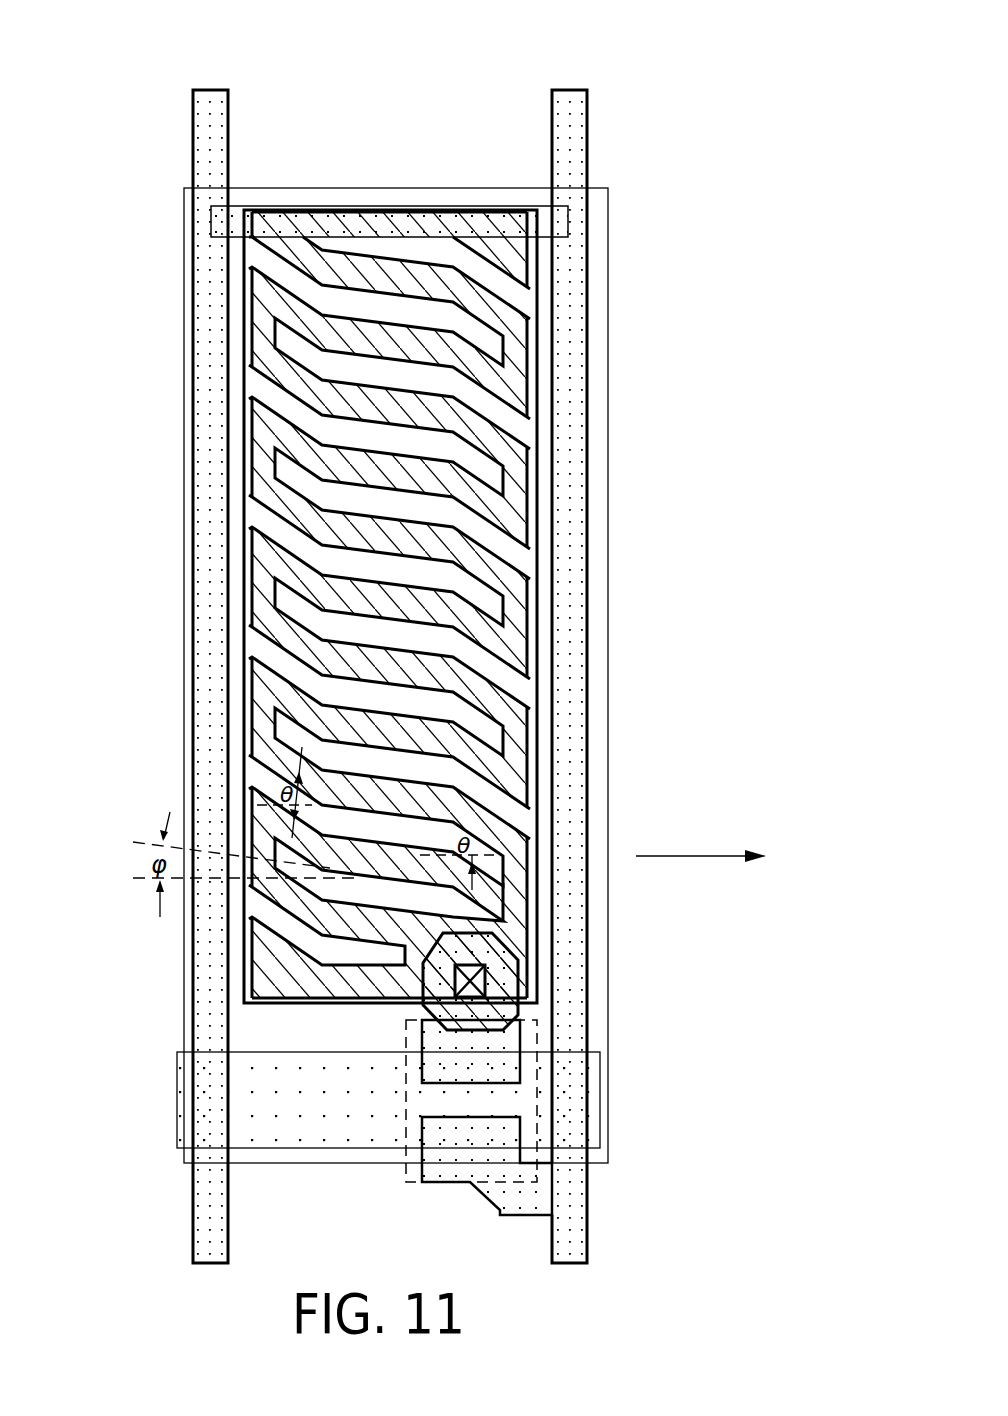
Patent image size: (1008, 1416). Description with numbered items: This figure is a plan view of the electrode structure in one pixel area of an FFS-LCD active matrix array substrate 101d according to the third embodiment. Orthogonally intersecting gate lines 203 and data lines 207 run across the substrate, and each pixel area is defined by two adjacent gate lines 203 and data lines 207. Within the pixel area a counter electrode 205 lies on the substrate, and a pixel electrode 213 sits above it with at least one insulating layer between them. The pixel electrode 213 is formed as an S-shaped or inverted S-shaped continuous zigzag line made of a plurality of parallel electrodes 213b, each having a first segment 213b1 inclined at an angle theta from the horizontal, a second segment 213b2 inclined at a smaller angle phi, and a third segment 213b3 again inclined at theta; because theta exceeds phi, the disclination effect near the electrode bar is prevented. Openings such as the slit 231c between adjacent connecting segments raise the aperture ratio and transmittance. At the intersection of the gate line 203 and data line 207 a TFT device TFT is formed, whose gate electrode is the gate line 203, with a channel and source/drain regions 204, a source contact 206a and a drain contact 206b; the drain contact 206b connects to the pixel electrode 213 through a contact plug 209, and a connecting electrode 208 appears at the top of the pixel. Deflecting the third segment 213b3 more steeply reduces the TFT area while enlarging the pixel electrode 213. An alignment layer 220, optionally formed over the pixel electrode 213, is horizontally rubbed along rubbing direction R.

The active matrix array substrate 101d is at (457, 581).
The gate line 203 is at (180, 1100).
The channel and source/drain regions 204 is at (505, 1098).
The counter electrode 205 is at (537, 742).
The source contact 206a is at (505, 1132).
The drain contact 206b is at (505, 1065).
The data line 207 is at (208, 352).
The connecting electrode 208 is at (560, 223).
The contact plug 209 is at (490, 978).
The pixel electrode 213 is at (387, 605).
The parallel electrode 213b is at (381, 601).
The first segment 213b1 is at (263, 502).
The second segment 213b2 is at (280, 537).
The third segment 213b3 is at (280, 572).
The alignment layer 220 is at (607, 300).
The slit 231c is at (270, 657).
The TFT device TFT is at (517, 1138).
The rubbing direction R is at (700, 853).